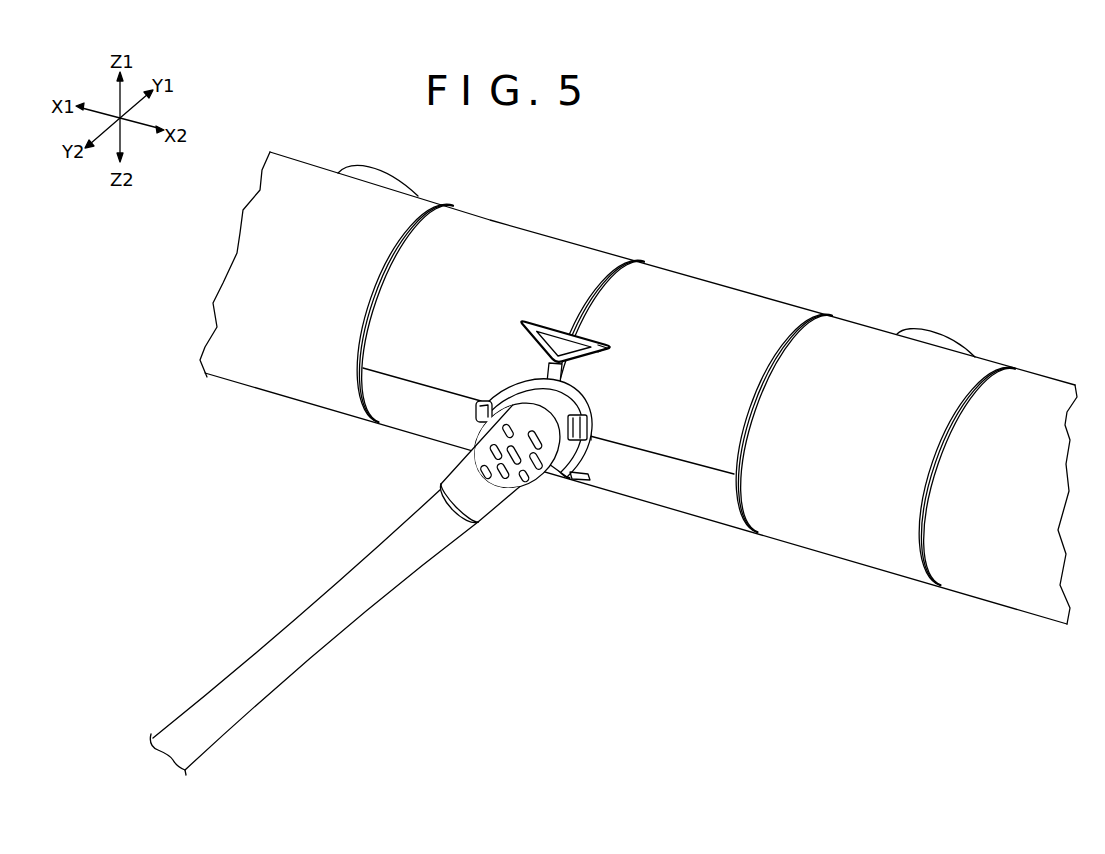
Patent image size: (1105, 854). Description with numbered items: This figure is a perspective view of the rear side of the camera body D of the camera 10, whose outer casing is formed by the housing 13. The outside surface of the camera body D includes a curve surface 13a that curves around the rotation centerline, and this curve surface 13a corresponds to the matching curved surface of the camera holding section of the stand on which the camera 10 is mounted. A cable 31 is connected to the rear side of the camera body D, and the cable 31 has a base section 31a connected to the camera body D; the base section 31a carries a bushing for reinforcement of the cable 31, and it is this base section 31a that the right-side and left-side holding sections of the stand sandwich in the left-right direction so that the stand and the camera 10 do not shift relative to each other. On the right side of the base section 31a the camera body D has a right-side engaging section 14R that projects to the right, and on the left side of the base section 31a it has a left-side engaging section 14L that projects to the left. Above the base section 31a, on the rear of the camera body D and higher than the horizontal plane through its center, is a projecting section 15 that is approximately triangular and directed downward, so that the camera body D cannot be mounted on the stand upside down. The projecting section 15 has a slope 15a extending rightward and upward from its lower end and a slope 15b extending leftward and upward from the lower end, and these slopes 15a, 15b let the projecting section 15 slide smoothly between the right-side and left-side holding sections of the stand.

The camera 10 is at (613, 459).
The housing 13 is at (1028, 376).
The curve surface 13a is at (757, 306).
The camera body D is at (892, 331).
The projecting section 15 is at (555, 324).
The slope 15a is at (519, 332).
The slope 15b is at (599, 360).
The right-side engaging section 14R is at (484, 401).
The left-side engaging section 14L is at (588, 418).
The cable 31 is at (352, 622).
The base section 31a is at (537, 472).